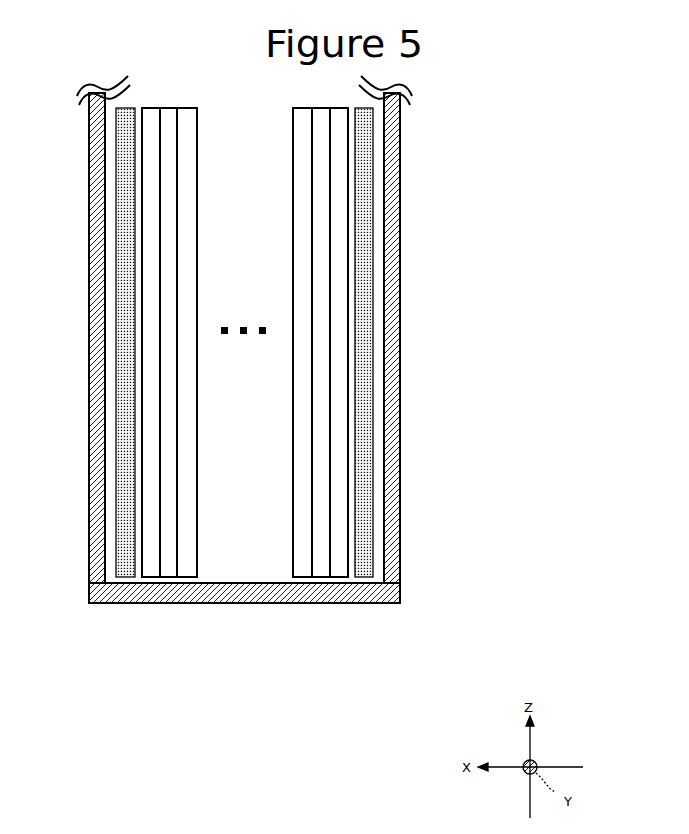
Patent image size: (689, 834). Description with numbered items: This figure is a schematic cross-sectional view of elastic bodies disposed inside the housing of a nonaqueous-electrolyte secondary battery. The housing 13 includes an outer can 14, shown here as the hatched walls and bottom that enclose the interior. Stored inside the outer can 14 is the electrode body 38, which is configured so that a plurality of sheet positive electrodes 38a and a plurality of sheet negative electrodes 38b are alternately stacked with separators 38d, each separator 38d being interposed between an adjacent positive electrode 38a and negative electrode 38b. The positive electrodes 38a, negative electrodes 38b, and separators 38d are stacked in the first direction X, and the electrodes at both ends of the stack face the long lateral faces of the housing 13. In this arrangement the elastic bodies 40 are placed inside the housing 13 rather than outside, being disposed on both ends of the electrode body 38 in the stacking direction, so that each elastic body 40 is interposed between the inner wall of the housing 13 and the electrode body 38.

The housing 13 is at (400, 402).
The outer can 14 is at (322, 329).
The electrode body 38 is at (230, 429).
The positive electrode 38a is at (150, 577).
The negative electrode 38b is at (187, 577).
The separator 38d is at (168, 577).
The elastic body 40 is at (118, 580).